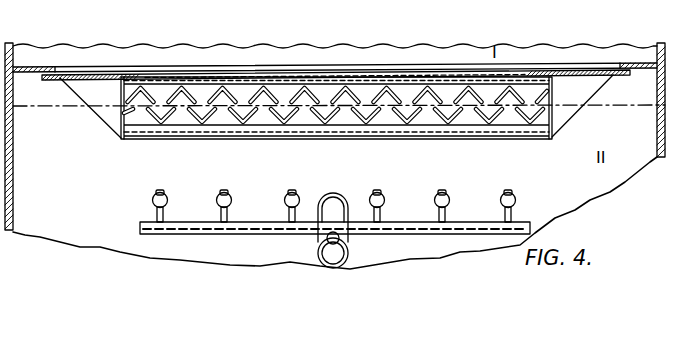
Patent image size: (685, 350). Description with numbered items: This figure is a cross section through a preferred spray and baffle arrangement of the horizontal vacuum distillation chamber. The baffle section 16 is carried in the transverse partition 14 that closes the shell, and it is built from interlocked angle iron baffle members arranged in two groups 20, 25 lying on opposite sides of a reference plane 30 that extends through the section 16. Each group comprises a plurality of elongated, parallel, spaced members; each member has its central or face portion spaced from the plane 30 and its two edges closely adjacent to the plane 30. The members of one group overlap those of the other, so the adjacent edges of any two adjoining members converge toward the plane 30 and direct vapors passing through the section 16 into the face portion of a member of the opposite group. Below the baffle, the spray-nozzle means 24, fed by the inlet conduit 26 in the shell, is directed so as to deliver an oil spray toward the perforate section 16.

The partition 14 is at (27, 75).
The perforate section 16 is at (486, 138).
The group of interlocked angle irons 20 is at (363, 112).
The spray-nozzle means 24 is at (383, 222).
The group of interlocked angle irons 25 is at (139, 99).
The inlet conduit 26 is at (348, 253).
The reference plane 30 is at (607, 103).